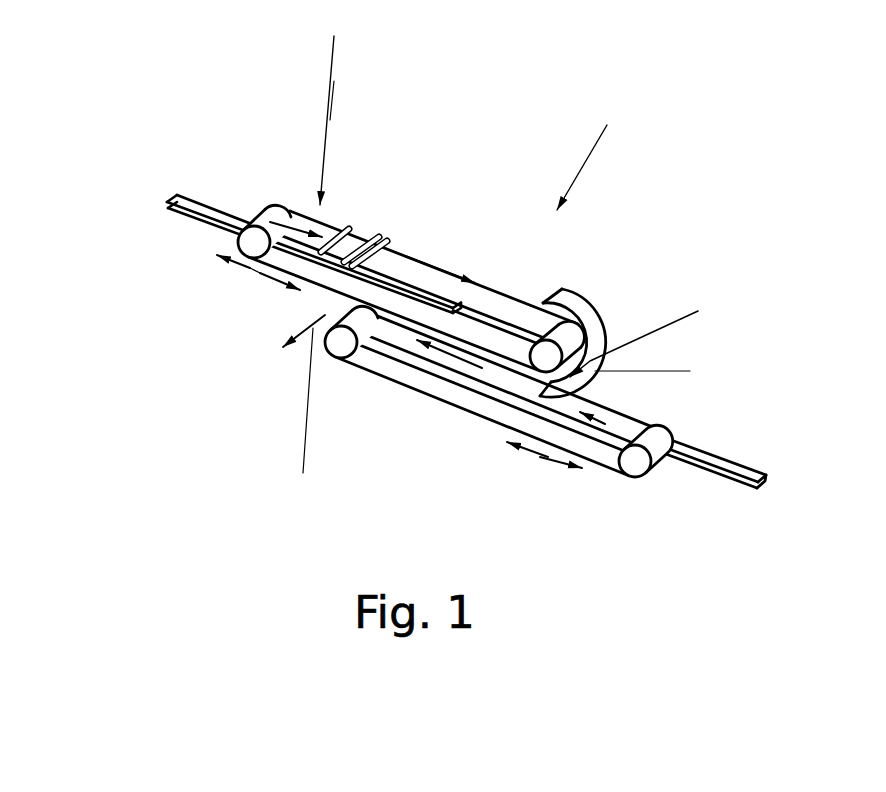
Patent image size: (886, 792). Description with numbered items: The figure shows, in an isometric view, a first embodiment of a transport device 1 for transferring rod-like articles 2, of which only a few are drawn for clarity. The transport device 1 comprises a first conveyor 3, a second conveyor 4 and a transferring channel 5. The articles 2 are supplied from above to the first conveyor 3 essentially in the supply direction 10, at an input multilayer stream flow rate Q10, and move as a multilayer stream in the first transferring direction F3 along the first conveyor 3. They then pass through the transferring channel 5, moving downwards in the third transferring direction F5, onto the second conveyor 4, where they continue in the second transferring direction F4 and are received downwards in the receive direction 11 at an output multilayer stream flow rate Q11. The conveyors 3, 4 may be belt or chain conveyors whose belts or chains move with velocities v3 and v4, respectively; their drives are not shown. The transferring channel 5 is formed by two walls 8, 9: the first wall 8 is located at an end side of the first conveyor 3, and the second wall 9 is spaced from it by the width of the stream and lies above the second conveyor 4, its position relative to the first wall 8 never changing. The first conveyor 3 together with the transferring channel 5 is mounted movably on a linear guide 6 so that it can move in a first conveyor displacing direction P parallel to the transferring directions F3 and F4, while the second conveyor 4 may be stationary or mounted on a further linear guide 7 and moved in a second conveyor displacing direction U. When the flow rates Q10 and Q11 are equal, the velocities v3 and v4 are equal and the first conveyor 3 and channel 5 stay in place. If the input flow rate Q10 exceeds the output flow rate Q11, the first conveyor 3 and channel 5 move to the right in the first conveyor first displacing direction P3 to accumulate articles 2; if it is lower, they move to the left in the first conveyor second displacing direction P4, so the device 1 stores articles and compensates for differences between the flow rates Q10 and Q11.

The transport device 1 is at (651, 125).
The rod-like articles 2 is at (350, 228).
The first conveyor 3 is at (258, 208).
The second conveyor 4 is at (643, 435).
The transferring channel 5 is at (617, 316).
The linear guide 6 is at (177, 222).
The linear guide 7 is at (707, 470).
The first wall 8 is at (570, 342).
The second wall 9 is at (725, 371).
The supply direction 10 is at (381, 35).
The receive direction 11 is at (303, 425).
The input multilayer stream flow rate Q10 is at (414, 81).
The output multilayer stream flow rate Q11 is at (303, 473).
The velocity of the first conveyor v3 is at (295, 223).
The velocity of the second conveyor v4 is at (603, 424).
The first transferring direction F3 is at (433, 261).
The second transferring direction F4 is at (455, 357).
The third transferring direction F5 is at (748, 311).
The second conveyor displacing direction U is at (543, 457).
The first conveyor displacing direction P is at (250, 270).
The first conveyor first displacing direction P3 is at (267, 278).
The first conveyor second displacing direction P4 is at (242, 267).